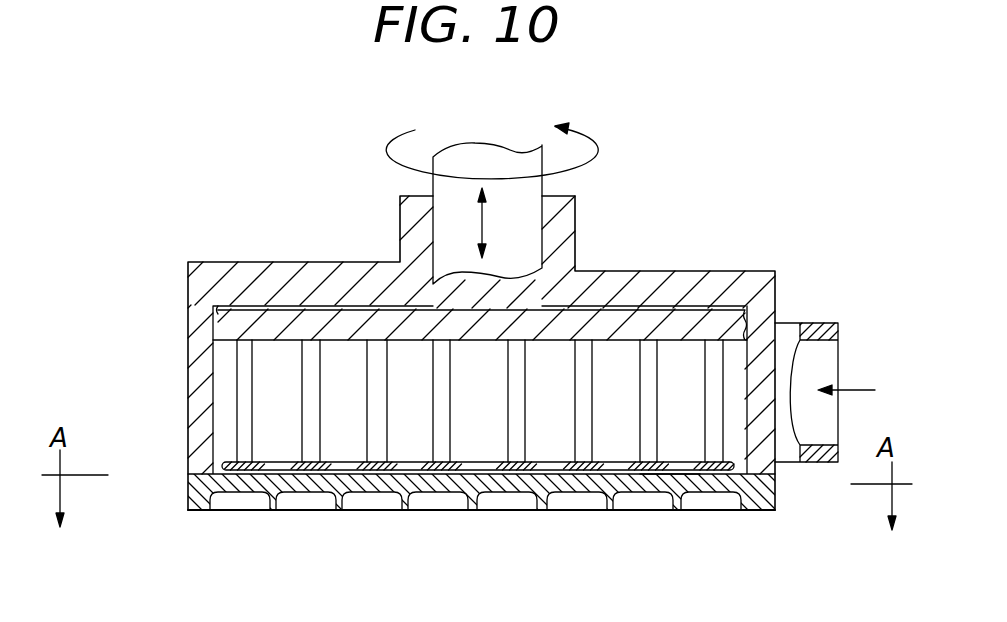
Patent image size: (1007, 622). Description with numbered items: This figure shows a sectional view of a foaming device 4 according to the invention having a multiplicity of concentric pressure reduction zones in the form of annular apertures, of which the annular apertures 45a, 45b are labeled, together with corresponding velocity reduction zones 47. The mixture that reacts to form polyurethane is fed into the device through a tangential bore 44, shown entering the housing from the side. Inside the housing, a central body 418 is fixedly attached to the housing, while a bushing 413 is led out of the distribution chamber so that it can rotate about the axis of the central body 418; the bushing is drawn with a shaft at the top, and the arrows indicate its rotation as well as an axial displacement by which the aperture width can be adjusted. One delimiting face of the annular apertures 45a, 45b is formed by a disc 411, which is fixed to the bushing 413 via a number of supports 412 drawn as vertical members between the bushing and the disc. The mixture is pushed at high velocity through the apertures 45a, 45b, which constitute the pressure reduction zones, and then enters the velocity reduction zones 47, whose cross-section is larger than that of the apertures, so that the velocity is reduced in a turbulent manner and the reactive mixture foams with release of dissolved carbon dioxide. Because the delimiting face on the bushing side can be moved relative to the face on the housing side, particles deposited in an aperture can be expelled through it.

The foaming device 4 is at (688, 245).
The disc 411 is at (636, 470).
The supports 412 is at (307, 382).
The bushing 413 is at (560, 318).
The central body 418 is at (443, 487).
The tangential bore 44 is at (830, 372).
The annular aperture 45a is at (634, 477).
The annular aperture 45b is at (660, 475).
The velocity reduction zone 47 is at (308, 484).